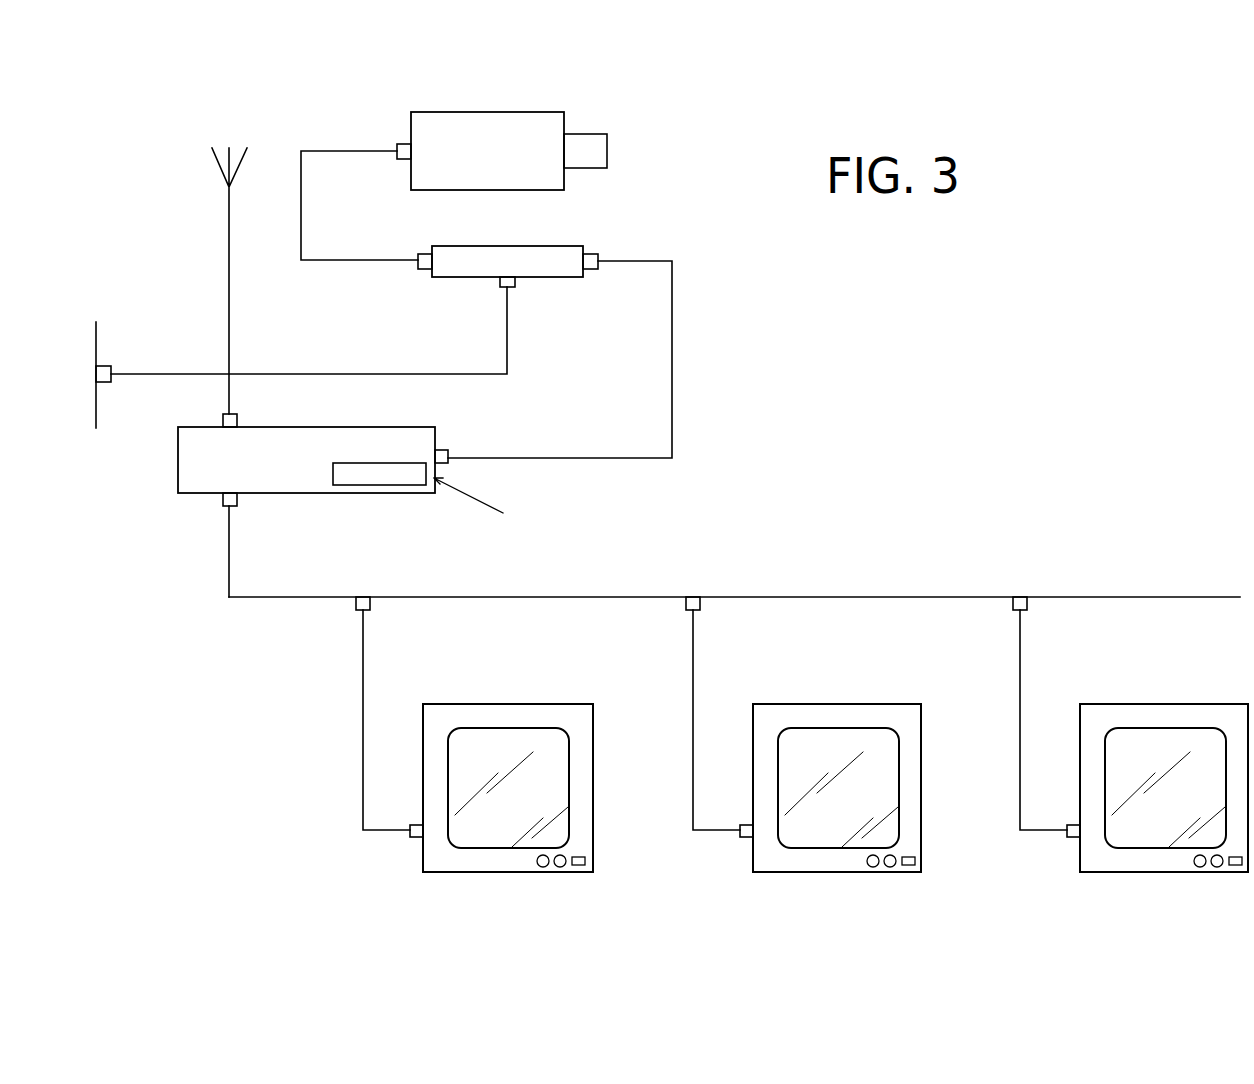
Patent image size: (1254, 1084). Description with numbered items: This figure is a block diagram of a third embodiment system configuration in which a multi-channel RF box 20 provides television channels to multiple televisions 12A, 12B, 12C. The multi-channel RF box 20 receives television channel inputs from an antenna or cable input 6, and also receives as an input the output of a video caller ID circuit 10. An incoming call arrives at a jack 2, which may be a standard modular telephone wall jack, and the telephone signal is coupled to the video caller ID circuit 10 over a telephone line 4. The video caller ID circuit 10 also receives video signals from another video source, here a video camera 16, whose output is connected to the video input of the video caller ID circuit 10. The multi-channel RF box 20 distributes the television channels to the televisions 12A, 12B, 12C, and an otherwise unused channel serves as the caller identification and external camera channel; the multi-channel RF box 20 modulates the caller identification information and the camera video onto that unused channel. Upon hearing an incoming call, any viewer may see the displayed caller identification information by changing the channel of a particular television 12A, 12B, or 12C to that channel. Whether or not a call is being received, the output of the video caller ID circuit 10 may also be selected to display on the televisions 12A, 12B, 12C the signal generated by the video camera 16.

The jack 2 is at (107, 382).
The telephone line 4 is at (290, 374).
The input 6 is at (227, 187).
The video caller ID circuit 10 is at (474, 278).
The television 12A is at (500, 704).
The television 12B is at (803, 750).
The television 12C is at (1130, 750).
The video camera 16 is at (564, 190).
The multi-channel RF box 20 is at (315, 493).